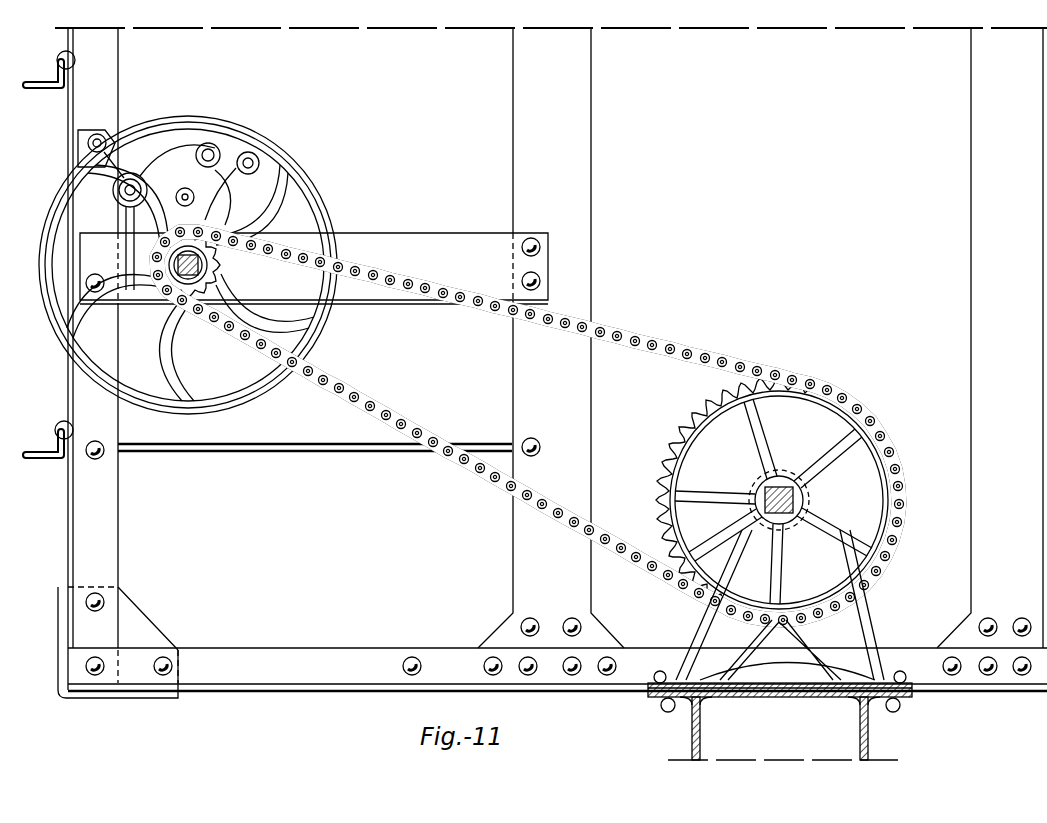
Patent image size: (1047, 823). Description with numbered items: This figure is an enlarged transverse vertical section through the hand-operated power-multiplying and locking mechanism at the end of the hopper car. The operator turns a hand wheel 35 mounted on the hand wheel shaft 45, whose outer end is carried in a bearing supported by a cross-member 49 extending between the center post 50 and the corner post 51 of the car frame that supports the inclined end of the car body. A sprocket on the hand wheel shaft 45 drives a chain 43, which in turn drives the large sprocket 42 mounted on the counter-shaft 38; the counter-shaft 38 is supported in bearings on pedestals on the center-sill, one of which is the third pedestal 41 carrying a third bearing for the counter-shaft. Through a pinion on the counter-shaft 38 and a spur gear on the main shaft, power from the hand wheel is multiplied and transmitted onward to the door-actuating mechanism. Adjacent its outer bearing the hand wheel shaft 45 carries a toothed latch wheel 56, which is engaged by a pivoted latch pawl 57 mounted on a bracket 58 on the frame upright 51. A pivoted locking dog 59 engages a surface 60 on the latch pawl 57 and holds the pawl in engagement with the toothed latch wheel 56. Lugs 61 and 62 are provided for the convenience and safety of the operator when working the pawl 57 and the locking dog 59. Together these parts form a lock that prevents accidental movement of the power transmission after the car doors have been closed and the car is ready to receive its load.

The hand wheel 35 is at (292, 174).
The counter-shaft 38 is at (783, 485).
The third pedestal 41 is at (837, 637).
The large sprocket 42 is at (770, 385).
The chain 43 is at (621, 333).
The hand wheel shaft 45 is at (172, 322).
The cross-member 49 is at (375, 252).
The center post 50 is at (585, 197).
The corner post 51 is at (85, 100).
The toothed latch wheel 56 is at (236, 280).
The latch pawl 57 is at (170, 190).
The bracket 58 is at (100, 126).
The locking dog 59 is at (218, 168).
The surface 60 is at (212, 144).
The lug 61 is at (192, 195).
The lug 62 is at (255, 160).